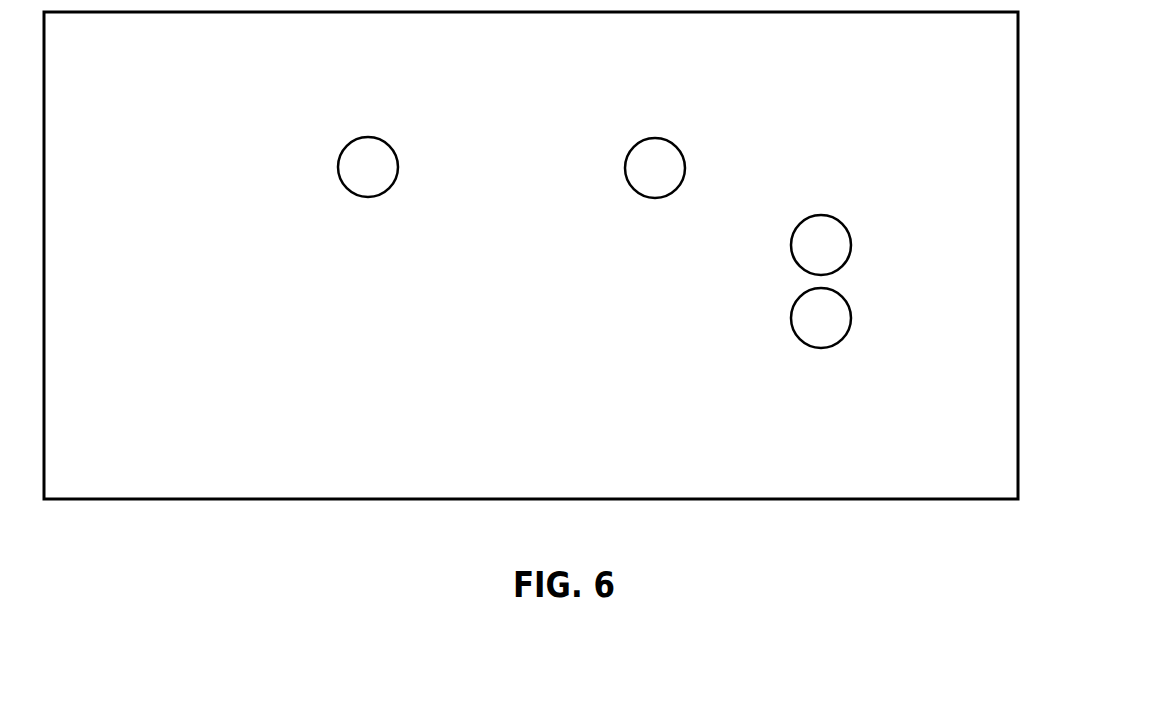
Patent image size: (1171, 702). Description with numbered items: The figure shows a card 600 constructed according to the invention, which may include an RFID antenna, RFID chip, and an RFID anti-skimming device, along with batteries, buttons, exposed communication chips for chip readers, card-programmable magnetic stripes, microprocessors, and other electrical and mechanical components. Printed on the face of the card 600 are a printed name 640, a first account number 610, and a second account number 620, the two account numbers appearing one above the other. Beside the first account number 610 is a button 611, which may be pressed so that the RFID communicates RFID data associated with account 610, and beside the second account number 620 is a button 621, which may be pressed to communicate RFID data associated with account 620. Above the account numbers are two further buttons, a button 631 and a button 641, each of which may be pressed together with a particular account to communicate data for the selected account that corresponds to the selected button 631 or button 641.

The card 600 is at (1128, 250).
The account number 610 is at (312, 242).
The button 611 is at (851, 243).
The account number 620 is at (312, 307).
The button 621 is at (851, 316).
The button 631 is at (368, 137).
The printed name 640 is at (145, 453).
The button 641 is at (685, 167).